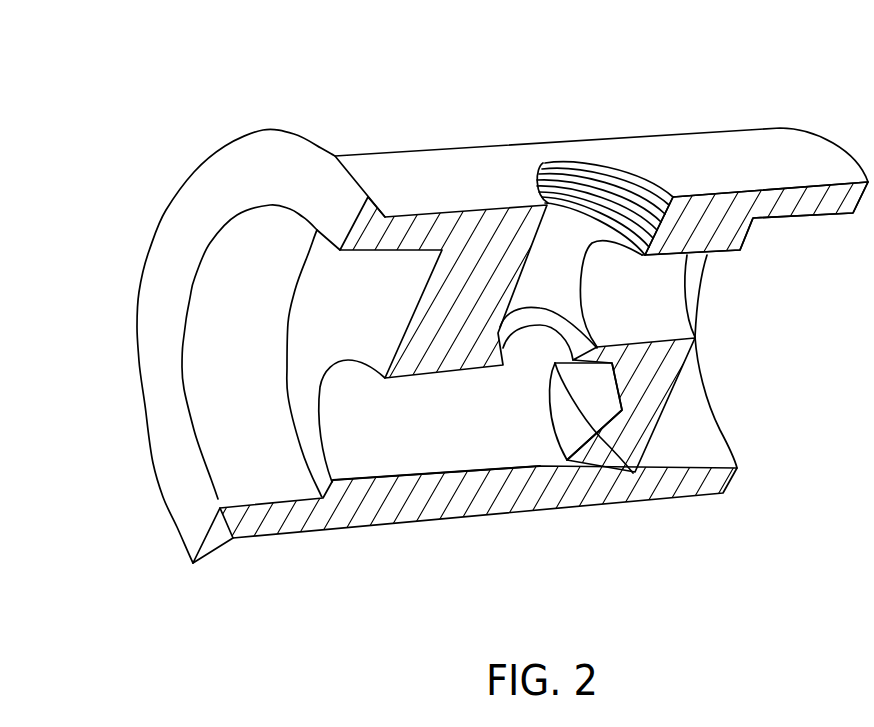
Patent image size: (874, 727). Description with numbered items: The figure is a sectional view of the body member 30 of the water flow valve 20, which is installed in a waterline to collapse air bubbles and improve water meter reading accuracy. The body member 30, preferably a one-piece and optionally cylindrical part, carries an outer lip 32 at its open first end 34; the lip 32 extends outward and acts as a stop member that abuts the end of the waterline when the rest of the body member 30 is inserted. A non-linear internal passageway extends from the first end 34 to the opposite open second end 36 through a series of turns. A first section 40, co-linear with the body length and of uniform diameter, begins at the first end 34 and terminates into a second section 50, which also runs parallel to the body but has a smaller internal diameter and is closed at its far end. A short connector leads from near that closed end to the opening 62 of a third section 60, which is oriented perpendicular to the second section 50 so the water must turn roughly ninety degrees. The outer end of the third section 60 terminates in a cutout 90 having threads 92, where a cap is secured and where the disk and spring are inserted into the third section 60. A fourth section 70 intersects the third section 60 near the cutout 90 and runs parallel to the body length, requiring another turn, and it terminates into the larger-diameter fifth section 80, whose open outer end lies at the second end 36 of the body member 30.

The valve 20 is at (586, 76).
The body member 30 is at (707, 150).
The lip 32 is at (385, 215).
The first end 34 is at (213, 487).
The second end 36 is at (737, 453).
The first section 40 is at (290, 484).
The second section 50 is at (446, 455).
The third section 60 is at (630, 440).
The opening 62 is at (535, 280).
The fourth section 70 is at (667, 303).
The fifth section 80 is at (690, 416).
The cutout 90 is at (556, 158).
The threads 92 is at (613, 156).